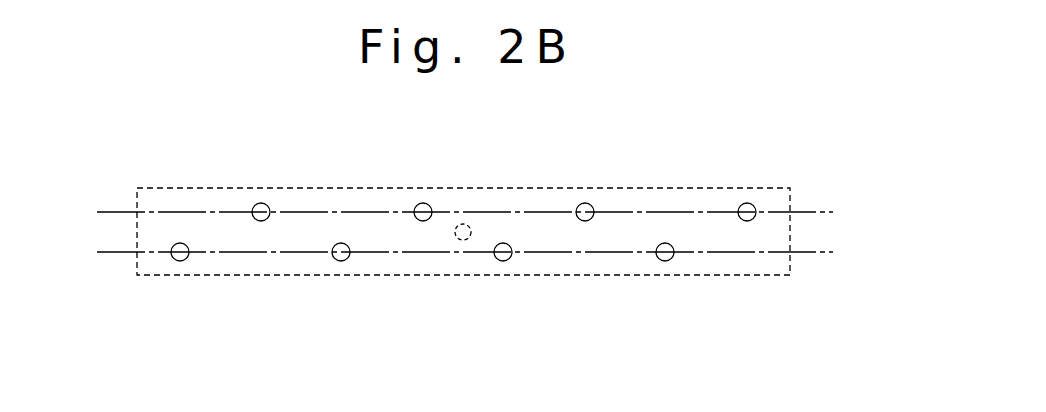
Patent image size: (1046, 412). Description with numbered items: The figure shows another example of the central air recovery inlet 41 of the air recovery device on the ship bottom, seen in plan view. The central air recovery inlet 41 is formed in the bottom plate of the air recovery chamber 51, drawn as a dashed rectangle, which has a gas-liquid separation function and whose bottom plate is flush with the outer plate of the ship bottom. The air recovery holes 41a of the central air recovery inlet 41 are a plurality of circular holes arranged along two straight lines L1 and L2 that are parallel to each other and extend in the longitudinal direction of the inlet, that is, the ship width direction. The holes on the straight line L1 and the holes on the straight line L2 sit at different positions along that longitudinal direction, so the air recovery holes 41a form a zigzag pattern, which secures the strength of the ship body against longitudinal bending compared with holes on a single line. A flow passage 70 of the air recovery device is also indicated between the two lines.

The central air recovery inlet 41 is at (448, 234).
The air recovery holes 41a is at (423, 206).
The air recovery chamber 51 is at (694, 188).
The flow passage 70 is at (463, 224).
The straight line L1 is at (808, 212).
The straight line L2 is at (808, 252).